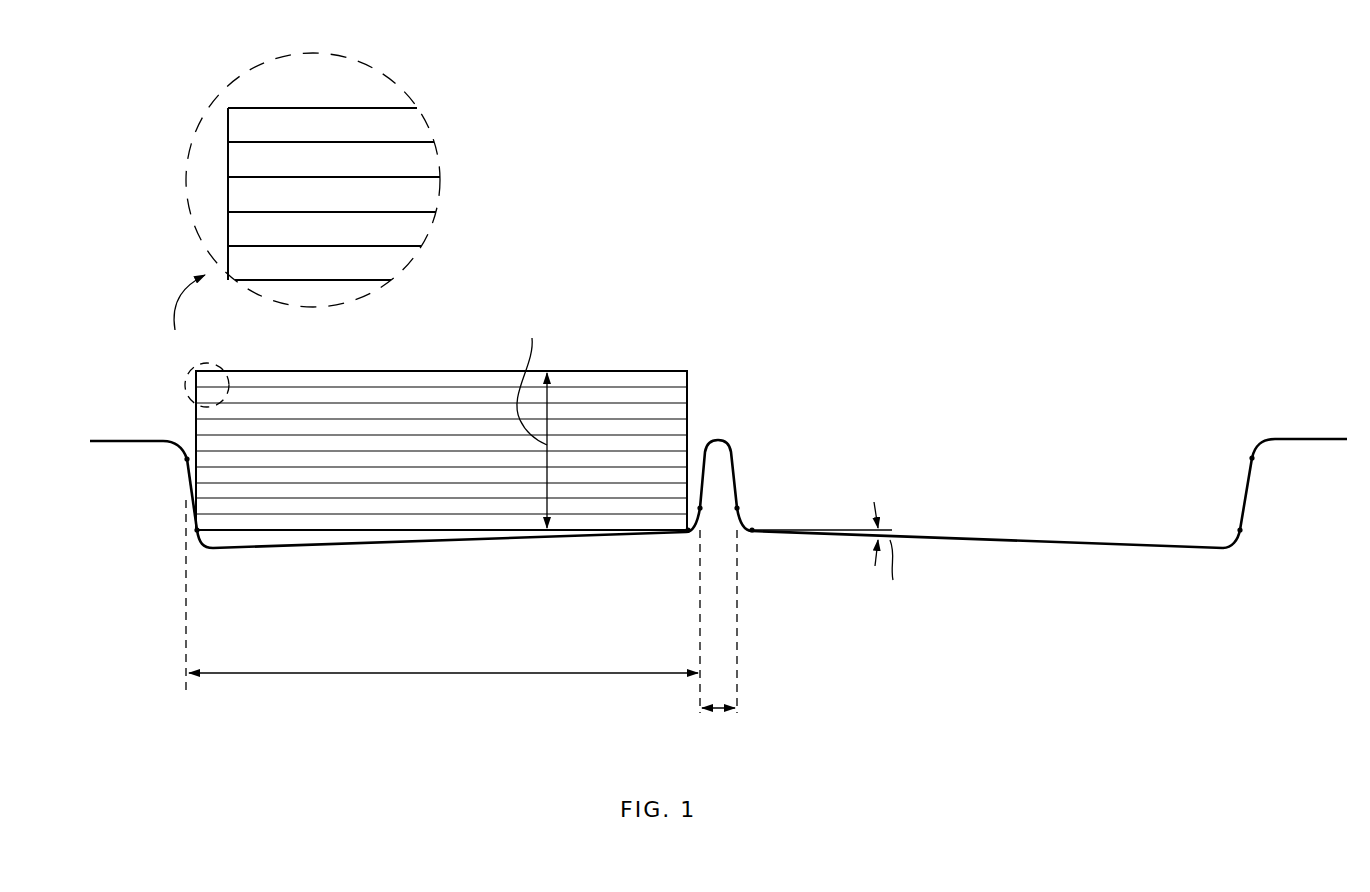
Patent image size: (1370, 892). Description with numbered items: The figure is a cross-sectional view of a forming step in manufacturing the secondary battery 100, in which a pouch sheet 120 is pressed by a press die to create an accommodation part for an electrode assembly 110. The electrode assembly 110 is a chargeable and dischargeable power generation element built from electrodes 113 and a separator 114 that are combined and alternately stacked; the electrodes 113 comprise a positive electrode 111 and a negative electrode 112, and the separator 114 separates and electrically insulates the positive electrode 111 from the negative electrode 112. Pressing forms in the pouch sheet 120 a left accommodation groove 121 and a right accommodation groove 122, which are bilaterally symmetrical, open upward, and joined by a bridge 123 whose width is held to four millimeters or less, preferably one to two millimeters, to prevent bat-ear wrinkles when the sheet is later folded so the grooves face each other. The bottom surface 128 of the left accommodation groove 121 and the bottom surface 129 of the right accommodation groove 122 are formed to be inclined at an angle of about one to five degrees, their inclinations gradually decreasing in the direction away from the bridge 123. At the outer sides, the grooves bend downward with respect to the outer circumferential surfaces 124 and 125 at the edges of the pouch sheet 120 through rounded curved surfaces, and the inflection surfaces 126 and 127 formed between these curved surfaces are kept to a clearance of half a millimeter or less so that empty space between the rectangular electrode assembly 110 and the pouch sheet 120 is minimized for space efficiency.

The battery cell / device 100 is at (1033, 190).
The electrode assembly 110 is at (415, 364).
The positive electrode 111 is at (427, 157).
The negative electrode 112 is at (420, 223).
The electrodes 113 is at (413, 194).
The separator 114 is at (237, 197).
The pouch sheet 120 is at (1296, 400).
The left accommodation groove 121 is at (231, 537).
The right accommodation groove 122 is at (987, 565).
The bridge 123 is at (740, 465).
The outer circumferential surface 124 is at (130, 439).
The outer circumferential surface 125 is at (1305, 442).
The inflection surface 126 is at (188, 493).
The inflection surface 127 is at (1240, 495).
The bottom surface of left accommodation groove 128 is at (363, 548).
The bottom surface of right accommodation groove 129 is at (1073, 548).